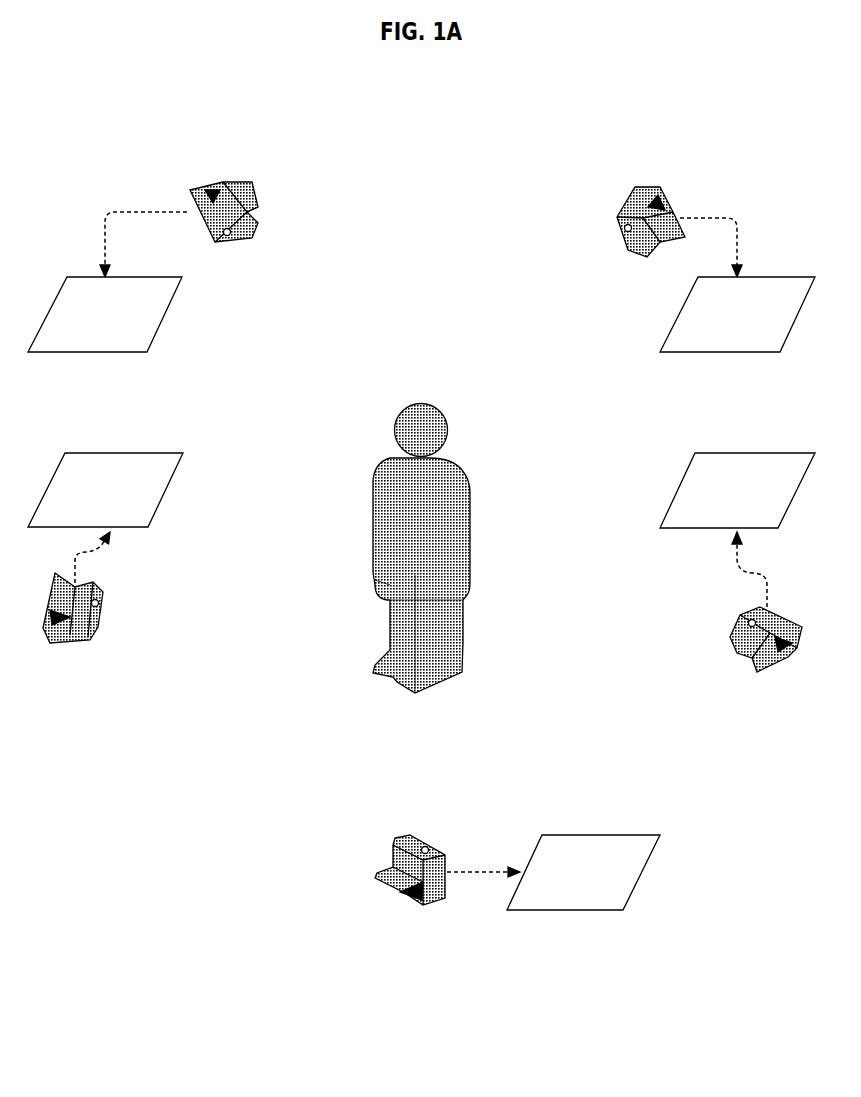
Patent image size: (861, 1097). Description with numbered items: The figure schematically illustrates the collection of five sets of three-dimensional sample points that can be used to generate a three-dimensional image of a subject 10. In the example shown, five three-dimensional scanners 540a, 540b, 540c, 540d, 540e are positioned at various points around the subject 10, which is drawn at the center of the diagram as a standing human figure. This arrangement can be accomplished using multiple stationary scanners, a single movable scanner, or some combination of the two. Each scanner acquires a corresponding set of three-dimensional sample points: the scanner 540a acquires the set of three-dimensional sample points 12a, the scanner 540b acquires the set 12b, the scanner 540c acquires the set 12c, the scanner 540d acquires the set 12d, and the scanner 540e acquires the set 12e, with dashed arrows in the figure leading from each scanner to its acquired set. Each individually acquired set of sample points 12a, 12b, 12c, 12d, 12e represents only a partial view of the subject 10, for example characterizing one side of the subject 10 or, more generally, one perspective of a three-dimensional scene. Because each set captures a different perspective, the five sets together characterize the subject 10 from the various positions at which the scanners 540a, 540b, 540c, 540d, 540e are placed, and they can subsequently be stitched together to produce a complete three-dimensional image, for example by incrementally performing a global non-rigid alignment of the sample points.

The subject 10 is at (463, 638).
The three-dimensional scanner 540a is at (665, 203).
The three-dimensional scanner 540b is at (760, 677).
The three-dimensional scanner 540c is at (417, 905).
The three-dimensional scanner 540d is at (80, 643).
The three-dimensional scanner 540e is at (188, 203).
The set of three-dimensional sample points 12a is at (753, 352).
The set of three-dimensional sample points 12b is at (752, 453).
The set of three-dimensional sample points 12c is at (605, 910).
The set of three-dimensional sample points 12d is at (120, 453).
The set of three-dimensional sample points 12e is at (120, 352).